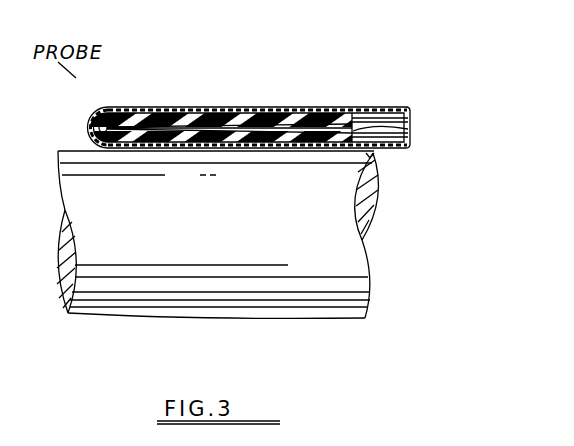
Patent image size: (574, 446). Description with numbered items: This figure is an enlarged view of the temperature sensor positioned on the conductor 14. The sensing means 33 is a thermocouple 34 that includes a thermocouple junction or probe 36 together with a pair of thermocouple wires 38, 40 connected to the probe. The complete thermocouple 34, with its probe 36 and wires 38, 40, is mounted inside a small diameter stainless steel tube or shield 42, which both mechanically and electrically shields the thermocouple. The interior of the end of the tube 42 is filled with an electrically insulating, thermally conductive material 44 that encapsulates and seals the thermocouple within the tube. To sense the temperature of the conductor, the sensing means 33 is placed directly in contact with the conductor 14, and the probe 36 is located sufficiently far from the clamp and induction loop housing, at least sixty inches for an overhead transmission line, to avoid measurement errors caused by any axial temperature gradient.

The conductor 14 is at (218, 300).
The sensing means 33 is at (263, 95).
The thermocouple 34 is at (134, 102).
The thermocouple junction or probe 36 is at (103, 110).
The thermocouple wire 38 is at (222, 108).
The thermocouple wire 40 is at (278, 122).
The stainless steel tube or shield 42 is at (333, 108).
The electrically insulating, thermally conductive material 44 is at (99, 130).